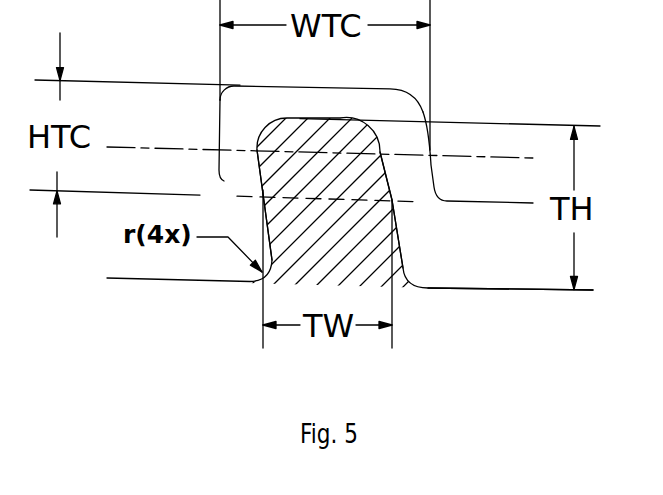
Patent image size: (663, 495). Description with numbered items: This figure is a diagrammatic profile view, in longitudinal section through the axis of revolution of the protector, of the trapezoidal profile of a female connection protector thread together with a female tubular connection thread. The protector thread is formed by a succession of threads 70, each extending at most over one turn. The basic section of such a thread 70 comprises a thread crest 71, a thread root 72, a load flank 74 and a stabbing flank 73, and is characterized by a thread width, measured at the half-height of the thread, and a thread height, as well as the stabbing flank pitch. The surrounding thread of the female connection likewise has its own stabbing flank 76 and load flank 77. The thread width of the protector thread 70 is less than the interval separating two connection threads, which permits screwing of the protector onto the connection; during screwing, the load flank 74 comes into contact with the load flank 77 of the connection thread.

The thread 70 is at (350, 247).
The thread crest 71 is at (330, 117).
The thread root 72 is at (455, 287).
The stabbing flank 73 is at (395, 215).
The load flank 74 is at (263, 212).
The stabbing flank 76 is at (432, 167).
The load flank 77 is at (220, 131).